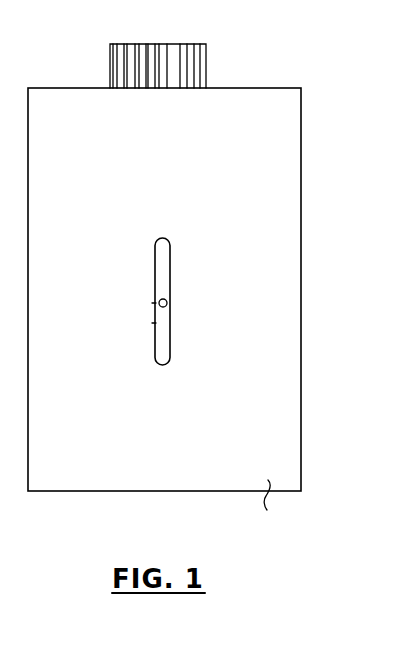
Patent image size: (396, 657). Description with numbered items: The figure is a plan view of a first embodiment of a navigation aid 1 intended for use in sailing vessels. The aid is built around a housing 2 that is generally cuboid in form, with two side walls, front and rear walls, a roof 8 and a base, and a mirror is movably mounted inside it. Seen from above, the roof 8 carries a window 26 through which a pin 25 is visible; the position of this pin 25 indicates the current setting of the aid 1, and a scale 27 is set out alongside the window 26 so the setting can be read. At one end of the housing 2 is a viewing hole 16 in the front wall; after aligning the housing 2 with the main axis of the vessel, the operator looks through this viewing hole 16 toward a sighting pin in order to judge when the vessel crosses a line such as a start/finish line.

The navigation aid 1 is at (193, 309).
The housing 2 is at (301, 416).
The roof 8 is at (269, 505).
The viewing hole 16 is at (121, 52).
The pin 25 is at (167, 302).
The window 26 is at (158, 350).
The scale 27 is at (155, 270).